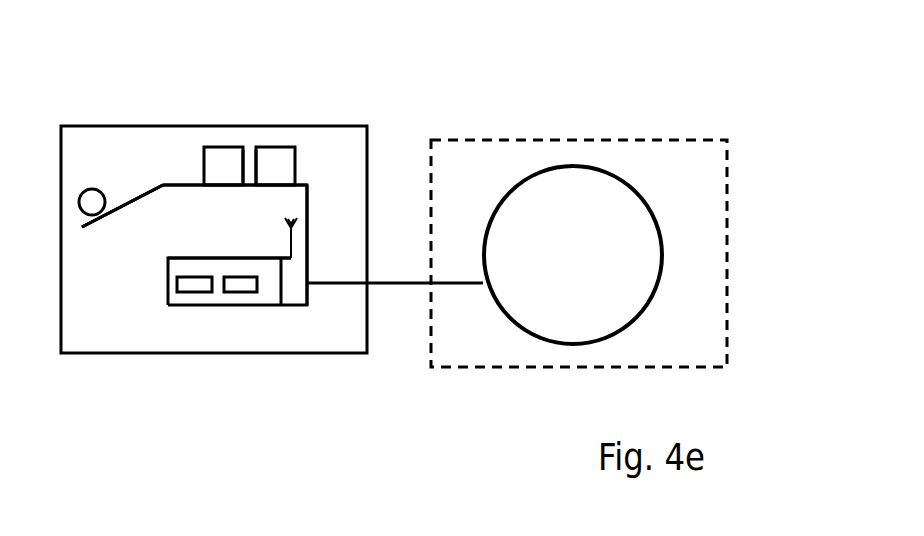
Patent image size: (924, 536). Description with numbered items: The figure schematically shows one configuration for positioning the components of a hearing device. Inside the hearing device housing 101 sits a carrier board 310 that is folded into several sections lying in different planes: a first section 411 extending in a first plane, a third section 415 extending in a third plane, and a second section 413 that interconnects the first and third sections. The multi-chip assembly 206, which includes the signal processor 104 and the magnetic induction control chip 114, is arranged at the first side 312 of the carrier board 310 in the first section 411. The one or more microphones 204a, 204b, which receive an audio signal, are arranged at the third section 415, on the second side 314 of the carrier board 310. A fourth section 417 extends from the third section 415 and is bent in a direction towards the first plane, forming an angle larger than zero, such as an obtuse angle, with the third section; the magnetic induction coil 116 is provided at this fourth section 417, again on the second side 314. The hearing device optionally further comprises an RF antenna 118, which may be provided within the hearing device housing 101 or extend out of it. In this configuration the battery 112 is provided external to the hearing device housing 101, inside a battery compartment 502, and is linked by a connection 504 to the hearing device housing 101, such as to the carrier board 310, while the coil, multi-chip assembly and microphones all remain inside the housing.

The hearing device housing 101 is at (237, 353).
The carrier board 310 is at (308, 200).
The first side of the carrier board 312 is at (122, 212).
The fourth section of the carrier board 417 is at (140, 196).
The second side of the carrier board 314 is at (197, 185).
The magnetic induction coil 116 is at (89, 189).
The microphone 204a is at (217, 147).
The microphone 204b is at (267, 147).
The third section of the carrier board 415 is at (245, 183).
The first section of the carrier board 411 is at (230, 305).
The magnetic induction control chip 114 is at (182, 277).
The signal processor 104 is at (249, 277).
The multi-chip assembly 206 is at (240, 258).
The RF antenna 118 is at (293, 250).
The second section of the carrier board 413 is at (308, 221).
The connection 504 is at (382, 283).
The battery compartment 502 is at (727, 327).
The battery 112 is at (658, 217).